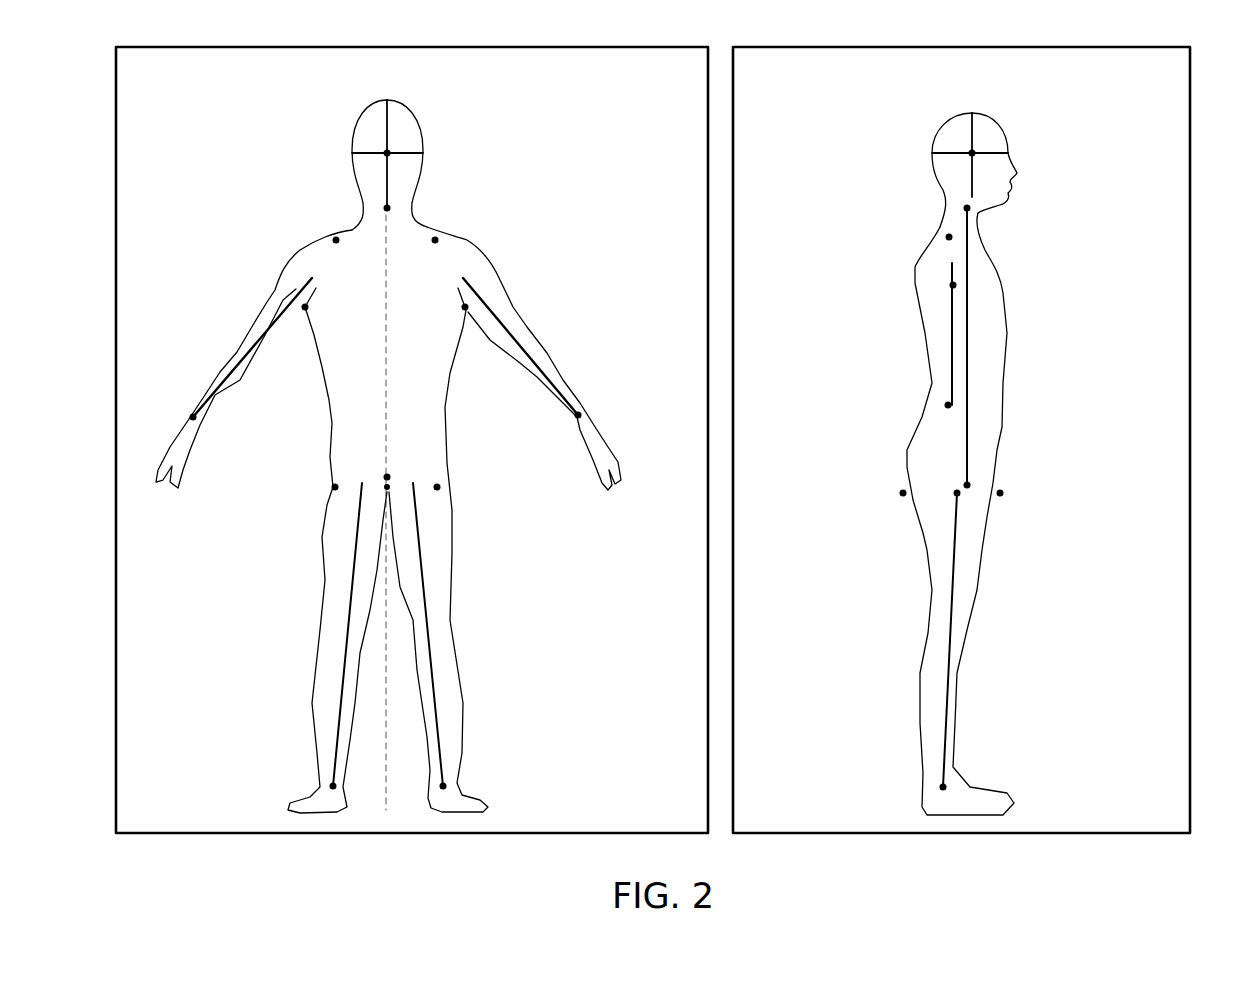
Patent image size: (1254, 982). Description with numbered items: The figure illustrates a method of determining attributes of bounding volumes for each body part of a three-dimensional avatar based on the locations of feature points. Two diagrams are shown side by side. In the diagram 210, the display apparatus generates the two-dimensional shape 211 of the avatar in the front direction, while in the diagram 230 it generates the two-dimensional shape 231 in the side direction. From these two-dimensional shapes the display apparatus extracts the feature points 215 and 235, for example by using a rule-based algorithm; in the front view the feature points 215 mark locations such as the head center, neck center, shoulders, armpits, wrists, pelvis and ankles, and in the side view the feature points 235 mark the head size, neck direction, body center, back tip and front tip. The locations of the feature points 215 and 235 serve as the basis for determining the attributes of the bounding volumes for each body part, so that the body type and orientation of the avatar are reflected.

The diagram 210 is at (413, 47).
The 2D shape 211 is at (412, 115).
The feature points 215 is at (387, 477).
The diagram 230 is at (962, 47).
The 2D shape 231 is at (997, 118).
The feature points 235 is at (1000, 493).